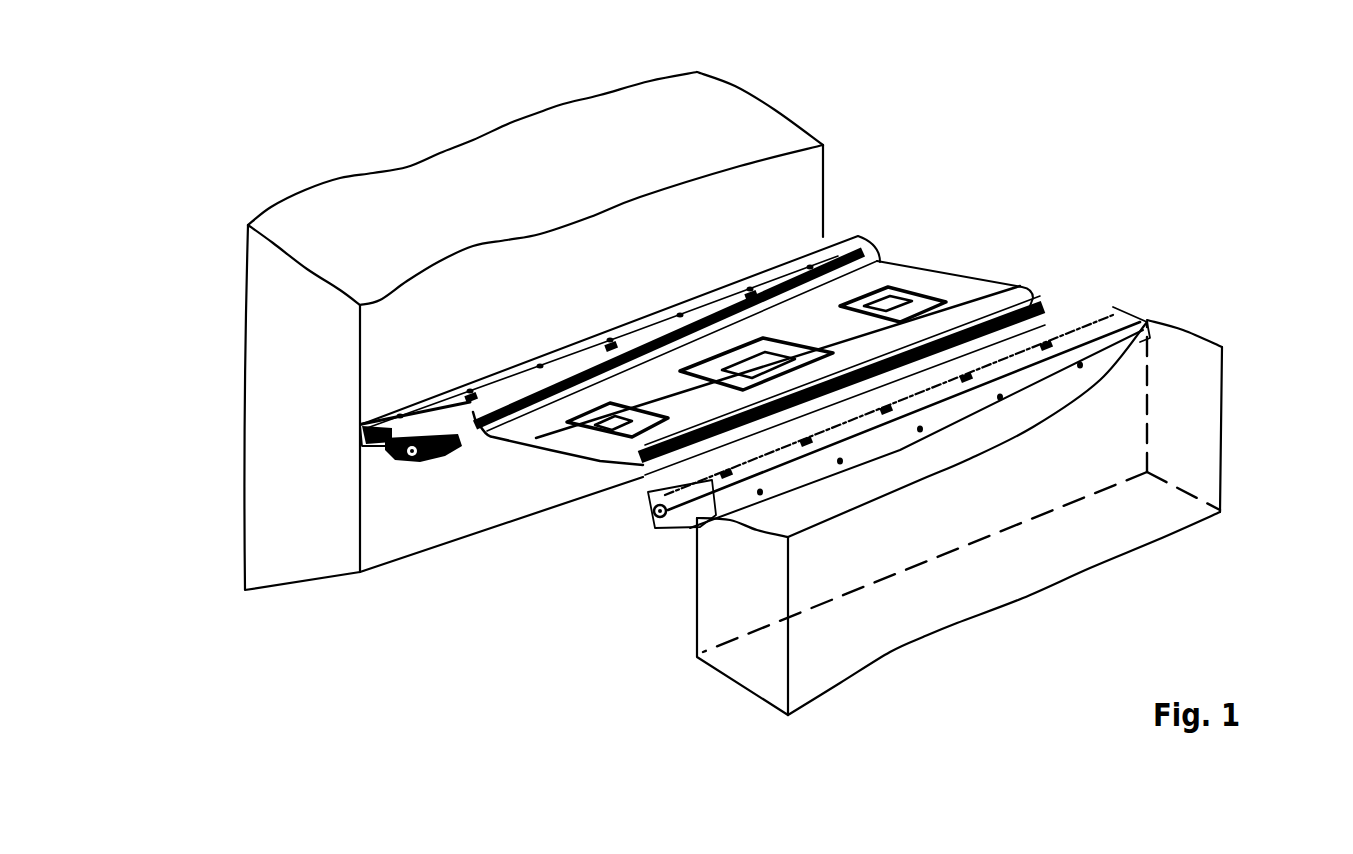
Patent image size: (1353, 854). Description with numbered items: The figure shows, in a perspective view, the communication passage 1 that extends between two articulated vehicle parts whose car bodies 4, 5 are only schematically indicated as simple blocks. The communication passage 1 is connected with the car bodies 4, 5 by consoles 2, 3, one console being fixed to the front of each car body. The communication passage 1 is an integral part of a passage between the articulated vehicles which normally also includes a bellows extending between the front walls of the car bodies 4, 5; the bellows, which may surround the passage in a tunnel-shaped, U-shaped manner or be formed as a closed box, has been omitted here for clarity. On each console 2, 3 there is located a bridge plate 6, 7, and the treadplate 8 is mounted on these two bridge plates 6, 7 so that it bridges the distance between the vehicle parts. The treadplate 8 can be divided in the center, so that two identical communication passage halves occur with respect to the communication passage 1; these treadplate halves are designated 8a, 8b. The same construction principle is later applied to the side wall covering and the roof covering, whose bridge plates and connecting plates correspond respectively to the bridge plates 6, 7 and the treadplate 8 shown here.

The communication passage 1 is at (763, 413).
The console 2 is at (1148, 317).
The console 3 is at (360, 438).
The car body 4 is at (700, 604).
The car body 5 is at (232, 272).
The bridge plate 6 is at (1066, 310).
The bridge plate 7 is at (867, 257).
The treadplate 8 is at (688, 497).
The treadplate half 8a is at (527, 423).
The treadplate half 8b is at (592, 447).